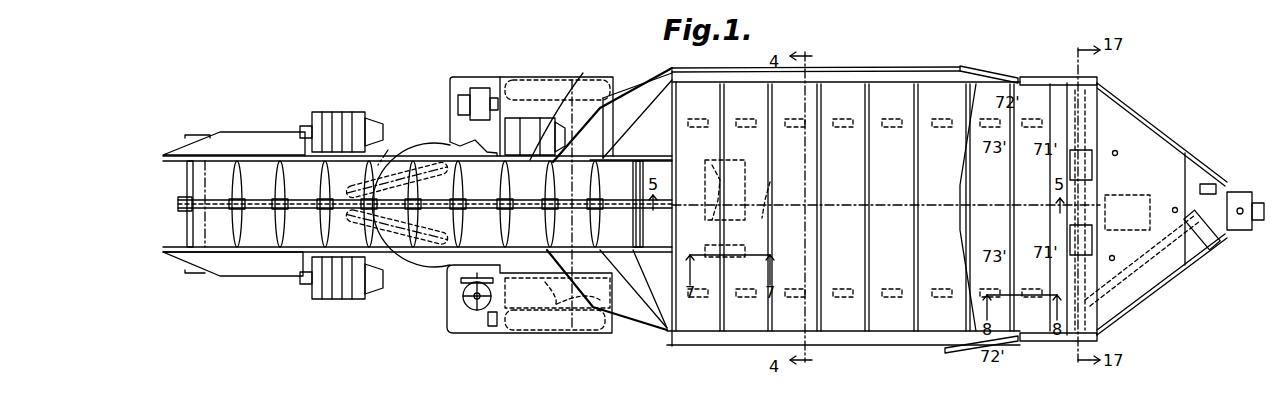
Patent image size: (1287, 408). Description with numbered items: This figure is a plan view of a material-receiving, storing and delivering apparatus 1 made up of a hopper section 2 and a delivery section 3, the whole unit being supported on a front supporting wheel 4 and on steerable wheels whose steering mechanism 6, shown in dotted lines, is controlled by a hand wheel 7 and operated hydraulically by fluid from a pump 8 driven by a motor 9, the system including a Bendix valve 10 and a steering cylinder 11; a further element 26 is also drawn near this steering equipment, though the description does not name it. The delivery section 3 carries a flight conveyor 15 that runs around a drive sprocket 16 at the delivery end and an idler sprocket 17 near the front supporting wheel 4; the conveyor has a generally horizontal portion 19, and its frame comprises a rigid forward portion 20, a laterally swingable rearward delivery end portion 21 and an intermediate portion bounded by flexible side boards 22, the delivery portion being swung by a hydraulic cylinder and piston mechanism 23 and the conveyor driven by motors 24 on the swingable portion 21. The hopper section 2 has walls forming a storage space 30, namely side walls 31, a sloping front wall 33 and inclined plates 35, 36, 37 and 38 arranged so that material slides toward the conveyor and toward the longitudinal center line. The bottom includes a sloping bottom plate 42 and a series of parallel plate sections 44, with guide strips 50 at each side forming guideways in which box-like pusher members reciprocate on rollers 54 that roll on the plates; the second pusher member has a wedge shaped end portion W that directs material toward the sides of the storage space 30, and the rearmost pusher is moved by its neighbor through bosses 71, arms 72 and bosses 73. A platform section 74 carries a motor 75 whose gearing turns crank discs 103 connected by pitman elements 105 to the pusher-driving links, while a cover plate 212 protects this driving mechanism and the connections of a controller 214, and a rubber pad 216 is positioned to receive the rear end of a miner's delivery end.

The material-receiving, storing and delivering apparatus 1 is at (903, 66).
The hopper section 2 is at (920, 346).
The delivery section 3 is at (410, 250).
The front supporting wheel 4 is at (1226, 230).
The steering mechanism 6 is at (528, 305).
The hand wheel 7 is at (463, 288).
The pump 8 is at (478, 90).
The motor 9 is at (525, 118).
The Bendix valve 10 is at (600, 305).
The steering cylinder 11 is at (560, 305).
The flight conveyor 15 is at (280, 228).
The drive sprocket 16 is at (178, 203).
The idler sprocket 17 is at (636, 208).
The generally horizontal portion 19 is at (262, 156).
The rigid forward portion 20 is at (564, 106).
The laterally swingable, rearward delivery end portion 21 is at (290, 253).
The flexible side boards 22 is at (404, 172).
The hydraulic cylinder and piston mechanism 23 is at (392, 158).
The motors 24 is at (362, 118).
The bracket 26 is at (488, 318).
The storage space 30 is at (952, 110).
The side walls 31 is at (863, 72).
The front wall 33 is at (1030, 95).
The inclined plate 35 is at (681, 120).
The inclined plate 36 is at (650, 120).
The inclined plate 37 is at (622, 120).
The inclined plate 38 is at (604, 110).
The sloping bottom plate 42 is at (712, 115).
The plate sections 44 is at (927, 105).
The guide strips 50 is at (850, 82).
The rollers 54 is at (902, 128).
The bosses 71 is at (714, 180).
The arms 72 is at (738, 160).
The bosses 73 is at (768, 178).
The support or platform section 74 is at (1185, 153).
The motor 75 is at (1128, 194).
The crank disc 103 is at (1099, 85).
The links or pitman elements 105 is at (1063, 77).
The cover plate 212 is at (1146, 133).
The controller 214 is at (1195, 255).
The rubber pad 216 is at (1096, 132).
The wedge shaped end portion W is at (958, 195).